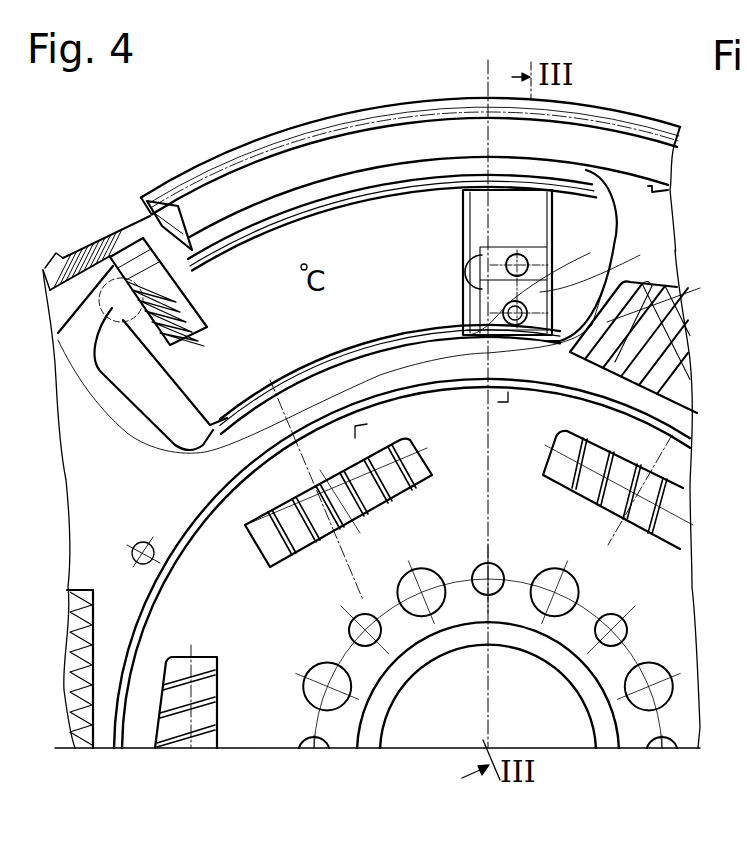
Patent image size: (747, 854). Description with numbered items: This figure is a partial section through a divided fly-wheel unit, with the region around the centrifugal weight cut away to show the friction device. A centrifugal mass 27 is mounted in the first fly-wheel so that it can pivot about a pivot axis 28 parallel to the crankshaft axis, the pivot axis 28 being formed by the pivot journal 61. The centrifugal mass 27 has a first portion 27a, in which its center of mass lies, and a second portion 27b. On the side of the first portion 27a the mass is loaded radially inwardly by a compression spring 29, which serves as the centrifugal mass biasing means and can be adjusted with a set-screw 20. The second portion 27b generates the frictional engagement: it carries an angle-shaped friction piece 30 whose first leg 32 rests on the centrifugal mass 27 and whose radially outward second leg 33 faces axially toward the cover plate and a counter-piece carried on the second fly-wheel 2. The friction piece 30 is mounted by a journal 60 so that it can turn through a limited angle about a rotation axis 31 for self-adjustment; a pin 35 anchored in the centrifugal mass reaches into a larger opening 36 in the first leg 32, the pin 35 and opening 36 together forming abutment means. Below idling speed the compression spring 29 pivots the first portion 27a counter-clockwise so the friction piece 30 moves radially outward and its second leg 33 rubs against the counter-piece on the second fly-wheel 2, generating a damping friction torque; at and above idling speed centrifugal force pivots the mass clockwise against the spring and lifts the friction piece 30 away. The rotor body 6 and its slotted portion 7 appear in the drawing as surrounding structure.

The second fly-wheel 2 is at (643, 150).
The rotor lamination 6 is at (682, 407).
The rotor 7 is at (684, 541).
The set-screw 20 is at (118, 256).
The centrifugal mass 27 is at (250, 148).
The first portion 27a is at (313, 234).
The second portion 27b is at (516, 197).
The pivot axis 28 is at (491, 247).
The compression spring 29 is at (183, 242).
The friction piece 30 is at (553, 317).
The rotation axis 31 is at (653, 188).
The first leg 32 is at (640, 255).
The second leg 33 is at (530, 225).
The pin 35 is at (468, 292).
The opening 36 is at (338, 243).
The journal 60 is at (590, 253).
The pivot journal 61 is at (472, 288).